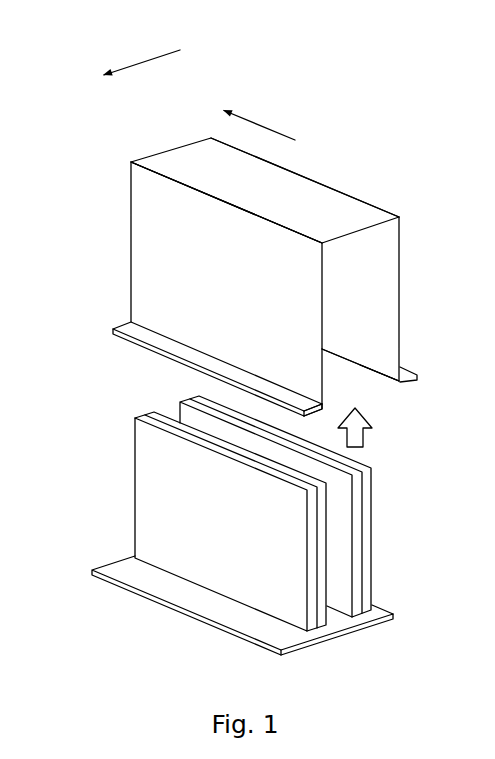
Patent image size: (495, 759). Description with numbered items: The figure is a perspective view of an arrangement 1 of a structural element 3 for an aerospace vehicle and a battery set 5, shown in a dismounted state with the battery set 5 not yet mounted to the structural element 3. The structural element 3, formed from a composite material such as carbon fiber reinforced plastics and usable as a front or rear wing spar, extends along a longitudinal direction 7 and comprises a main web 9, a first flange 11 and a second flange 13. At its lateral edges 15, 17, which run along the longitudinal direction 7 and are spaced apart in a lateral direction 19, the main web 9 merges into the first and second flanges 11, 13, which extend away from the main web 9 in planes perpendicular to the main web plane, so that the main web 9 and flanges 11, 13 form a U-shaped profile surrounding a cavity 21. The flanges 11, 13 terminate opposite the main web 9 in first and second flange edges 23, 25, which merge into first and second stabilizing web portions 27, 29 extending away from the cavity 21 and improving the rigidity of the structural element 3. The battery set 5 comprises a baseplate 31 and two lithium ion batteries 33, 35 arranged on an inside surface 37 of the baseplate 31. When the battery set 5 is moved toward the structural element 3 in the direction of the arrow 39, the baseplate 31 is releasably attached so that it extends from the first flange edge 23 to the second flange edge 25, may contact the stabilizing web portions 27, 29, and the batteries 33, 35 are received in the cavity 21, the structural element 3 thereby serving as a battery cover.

The arrangement 1 is at (77, 211).
The structural element 3 is at (335, 180).
The battery set 5 is at (170, 615).
The longitudinal direction 7 is at (263, 127).
The main web 9 is at (346, 219).
The first flange 11 is at (146, 273).
The second flange 13 is at (380, 326).
The lateral edge 15 is at (141, 160).
The lateral edge 17 is at (373, 220).
The lateral direction 19 is at (143, 62).
The cavity 21 is at (340, 306).
The first flange edge 23 is at (327, 406).
The second flange edge 25 is at (382, 380).
The first stabilizing web portion 27 is at (125, 338).
The second stabilizing web portion 29 is at (412, 363).
The baseplate 31 is at (395, 614).
The battery 33 is at (152, 480).
The battery 35 is at (368, 518).
The inside surface 37 is at (378, 603).
The arrow 39 is at (364, 438).